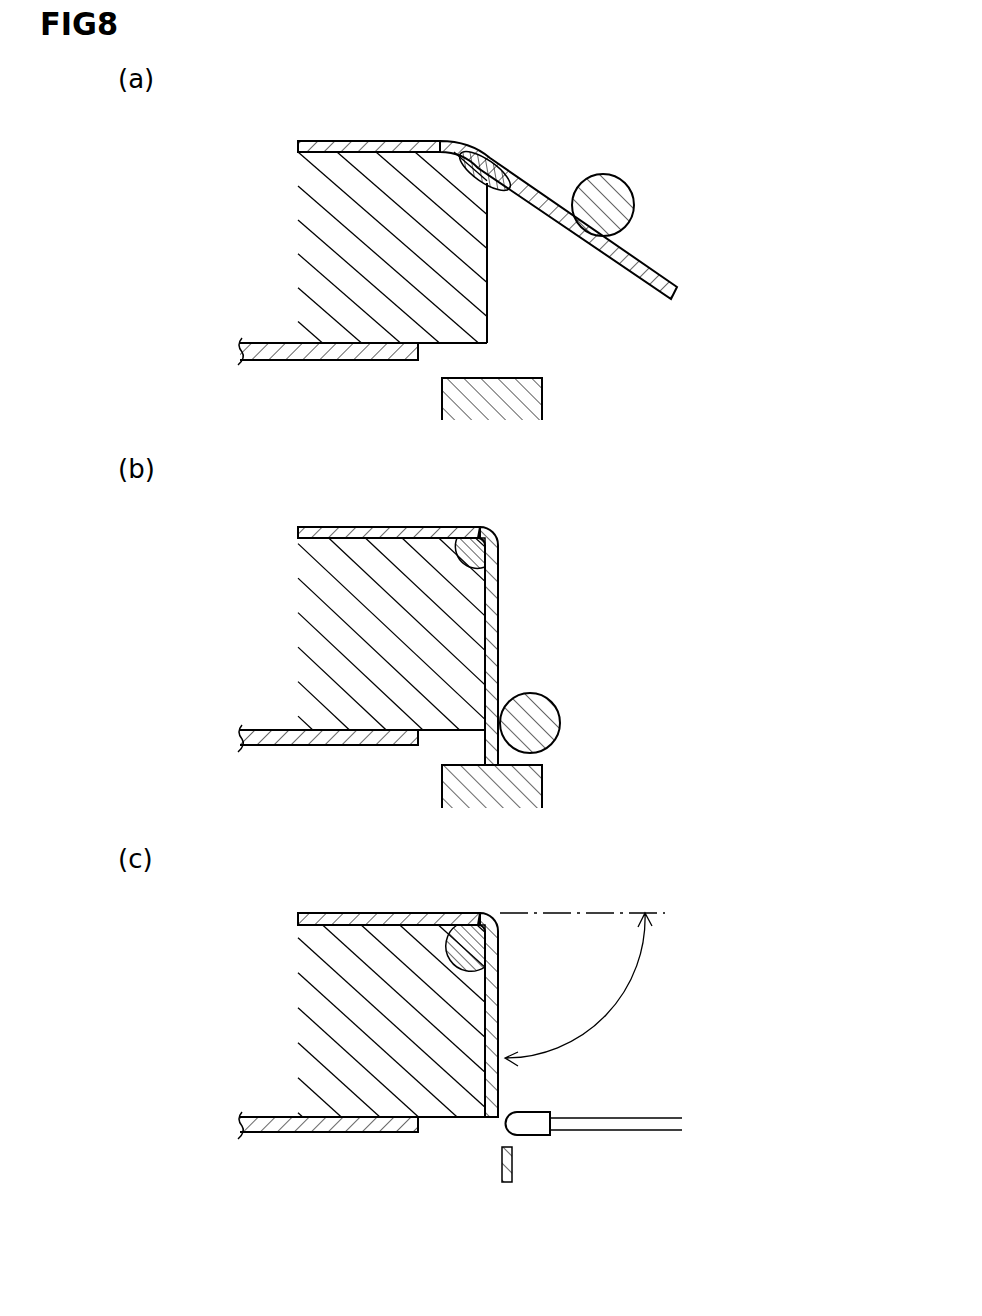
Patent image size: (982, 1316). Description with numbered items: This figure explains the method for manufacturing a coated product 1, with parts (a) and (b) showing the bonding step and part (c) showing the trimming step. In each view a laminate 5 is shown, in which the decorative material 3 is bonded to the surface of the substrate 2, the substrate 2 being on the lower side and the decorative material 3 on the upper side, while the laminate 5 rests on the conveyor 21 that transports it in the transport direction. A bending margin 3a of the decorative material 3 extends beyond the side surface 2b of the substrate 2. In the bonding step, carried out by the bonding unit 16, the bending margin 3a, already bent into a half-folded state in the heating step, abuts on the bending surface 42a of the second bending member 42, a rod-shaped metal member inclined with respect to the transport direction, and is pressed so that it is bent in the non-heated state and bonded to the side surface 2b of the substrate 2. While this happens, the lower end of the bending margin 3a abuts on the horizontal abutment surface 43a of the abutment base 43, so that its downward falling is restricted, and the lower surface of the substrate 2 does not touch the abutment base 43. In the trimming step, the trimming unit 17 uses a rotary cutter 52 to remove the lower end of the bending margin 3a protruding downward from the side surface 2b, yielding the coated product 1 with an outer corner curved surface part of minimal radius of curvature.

The coated product 1 is at (270, 908).
The substrate 2 is at (313, 183).
The decorative material 3 is at (375, 140).
The laminate 5 is at (278, 238).
The bonding unit 16 is at (549, 134).
The trimming unit 17 is at (614, 1104).
The conveyor 21 is at (315, 362).
The side surface of the substrate 2b is at (487, 262).
The bending margin 3a is at (647, 267).
The second bending member 42 is at (620, 177).
The bending surface 42a is at (578, 237).
The abutment base 43 is at (543, 395).
The abutment surface 43a is at (522, 378).
The rotary cutter 52 is at (547, 1145).